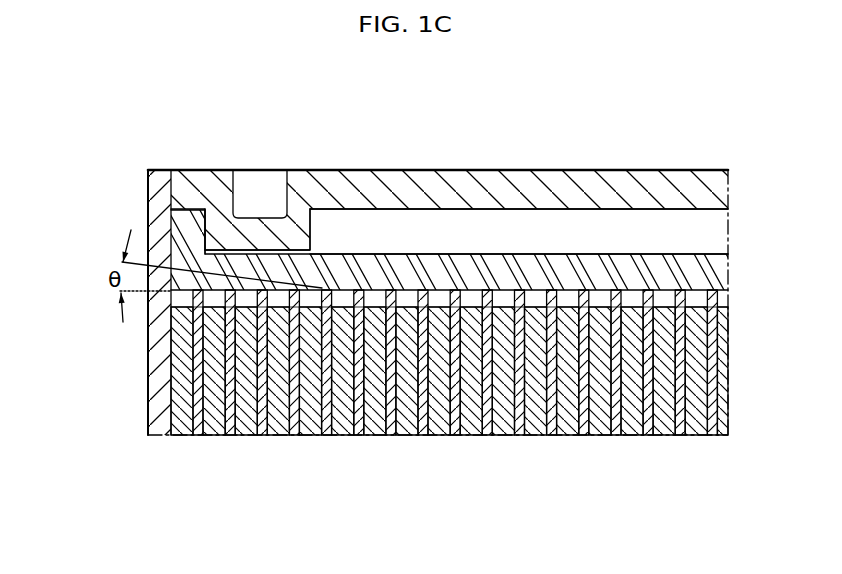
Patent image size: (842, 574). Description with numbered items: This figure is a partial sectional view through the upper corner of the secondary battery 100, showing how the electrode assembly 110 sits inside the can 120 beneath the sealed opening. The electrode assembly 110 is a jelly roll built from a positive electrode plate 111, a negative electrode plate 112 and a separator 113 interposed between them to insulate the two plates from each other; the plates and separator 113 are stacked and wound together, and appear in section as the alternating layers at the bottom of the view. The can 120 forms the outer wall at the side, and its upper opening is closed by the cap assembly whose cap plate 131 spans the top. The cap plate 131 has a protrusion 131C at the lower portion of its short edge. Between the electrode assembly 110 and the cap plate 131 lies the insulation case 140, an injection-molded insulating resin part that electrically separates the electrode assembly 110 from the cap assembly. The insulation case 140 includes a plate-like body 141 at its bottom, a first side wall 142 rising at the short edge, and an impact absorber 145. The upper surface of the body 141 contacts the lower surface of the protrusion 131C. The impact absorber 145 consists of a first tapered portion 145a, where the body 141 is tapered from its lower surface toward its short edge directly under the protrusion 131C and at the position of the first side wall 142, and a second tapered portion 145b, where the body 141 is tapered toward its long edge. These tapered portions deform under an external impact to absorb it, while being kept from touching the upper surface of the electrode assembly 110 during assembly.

The secondary battery 100 is at (118, 113).
The electrode assembly 110 is at (449, 409).
The positive electrode plate 111 is at (247, 437).
The negative electrode plate 112 is at (280, 437).
The separator 113 is at (317, 494).
The can 120 is at (158, 176).
The cap plate 131 is at (452, 176).
The protrusion 131C is at (312, 223).
The insulation case 140 is at (708, 253).
The body 141 is at (723, 275).
The first side wall 142 is at (183, 218).
The impact absorber 145 is at (372, 342).
The first tapered portion 145a is at (197, 276).
The second tapered portion 145b is at (372, 298).